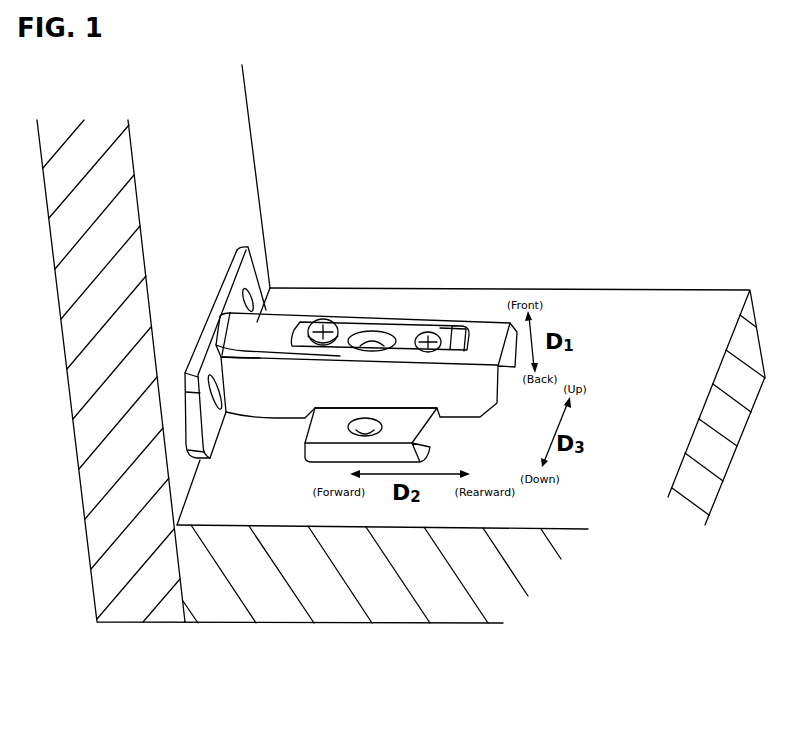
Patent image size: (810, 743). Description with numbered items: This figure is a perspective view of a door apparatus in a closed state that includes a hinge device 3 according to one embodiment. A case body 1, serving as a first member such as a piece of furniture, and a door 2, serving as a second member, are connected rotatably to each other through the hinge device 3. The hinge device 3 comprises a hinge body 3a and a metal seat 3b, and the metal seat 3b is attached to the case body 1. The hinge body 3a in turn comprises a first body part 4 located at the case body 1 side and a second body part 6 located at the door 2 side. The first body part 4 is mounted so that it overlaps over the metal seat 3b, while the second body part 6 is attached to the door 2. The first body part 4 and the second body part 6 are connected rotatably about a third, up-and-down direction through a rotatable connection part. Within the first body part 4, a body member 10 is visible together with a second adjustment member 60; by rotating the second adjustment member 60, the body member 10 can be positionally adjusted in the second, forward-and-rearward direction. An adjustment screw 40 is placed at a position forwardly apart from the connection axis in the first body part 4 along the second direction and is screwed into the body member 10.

The case body 1 is at (622, 286).
The door 2 is at (249, 106).
The hinge device 3 is at (409, 312).
The hinge body 3a is at (474, 314).
The metal seat 3b is at (318, 453).
The first body part 4 is at (373, 317).
The second body part 6 is at (257, 278).
The body member 10 is at (337, 313).
The adjustment screw 40 is at (323, 318).
The second adjustment member 60 is at (443, 327).